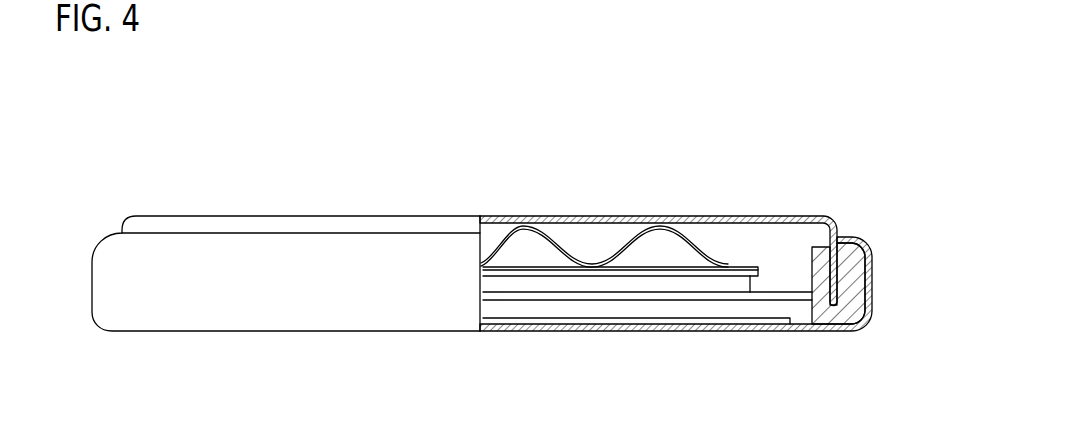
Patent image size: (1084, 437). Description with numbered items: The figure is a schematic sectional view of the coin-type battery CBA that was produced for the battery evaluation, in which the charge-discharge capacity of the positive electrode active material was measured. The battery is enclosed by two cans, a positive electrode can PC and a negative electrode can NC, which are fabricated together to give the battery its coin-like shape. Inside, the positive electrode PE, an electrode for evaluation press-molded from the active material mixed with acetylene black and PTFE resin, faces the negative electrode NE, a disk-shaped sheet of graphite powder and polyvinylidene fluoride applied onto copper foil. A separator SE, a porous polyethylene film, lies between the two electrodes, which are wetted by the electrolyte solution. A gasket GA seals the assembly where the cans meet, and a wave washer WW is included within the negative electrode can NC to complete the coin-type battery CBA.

The coin-type battery CBA is at (467, 162).
The negative electrode can NC is at (579, 215).
The wave washer WW is at (703, 250).
The negative electrode NE is at (780, 292).
The separator SE is at (758, 285).
The gasket GA is at (872, 268).
The positive electrode can PC is at (577, 332).
The positive electrode PE is at (622, 318).